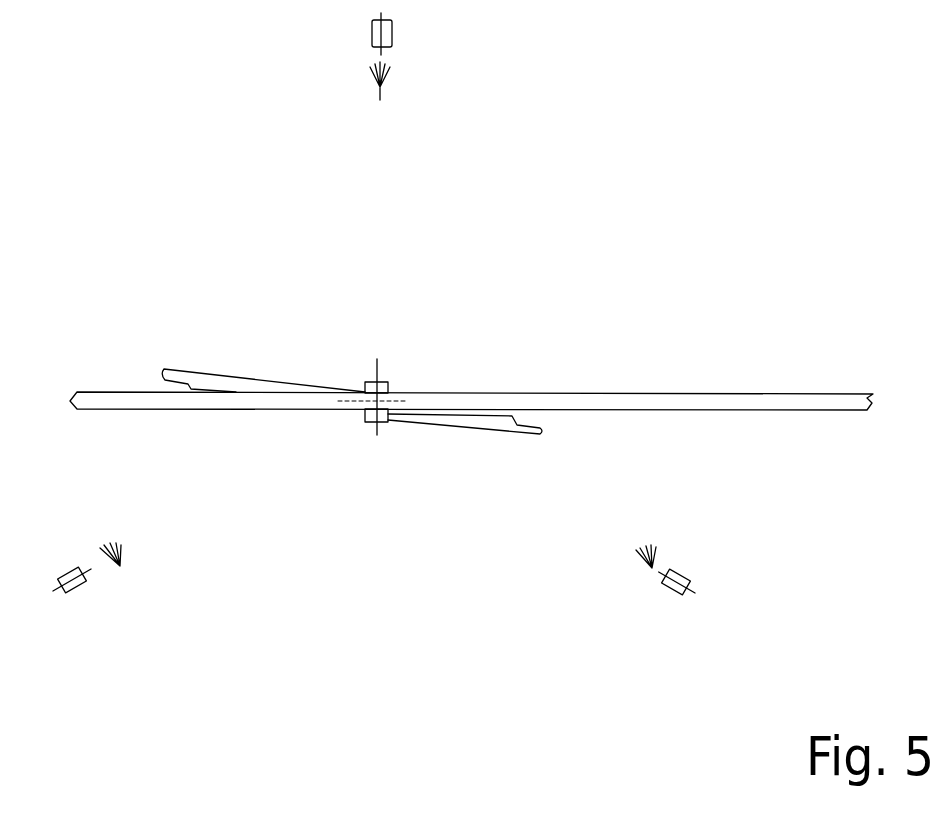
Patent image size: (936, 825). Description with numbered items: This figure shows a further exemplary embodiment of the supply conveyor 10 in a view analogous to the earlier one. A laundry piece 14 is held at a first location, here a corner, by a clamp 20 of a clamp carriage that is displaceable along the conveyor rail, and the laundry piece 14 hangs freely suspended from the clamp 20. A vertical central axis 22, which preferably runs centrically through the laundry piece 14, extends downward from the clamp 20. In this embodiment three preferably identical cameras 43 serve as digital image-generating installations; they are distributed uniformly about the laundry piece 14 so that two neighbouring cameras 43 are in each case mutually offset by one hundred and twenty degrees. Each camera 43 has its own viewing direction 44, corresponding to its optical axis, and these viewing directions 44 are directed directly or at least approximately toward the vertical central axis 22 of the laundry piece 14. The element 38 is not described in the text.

The supply conveyor 10 is at (643, 353).
The laundry piece 14 is at (270, 387).
The clamp 20 is at (383, 381).
The vertical central axis 22 is at (367, 406).
The support bar 38 is at (802, 400).
The camera 43 is at (392, 33).
The viewing direction 44 is at (383, 88).